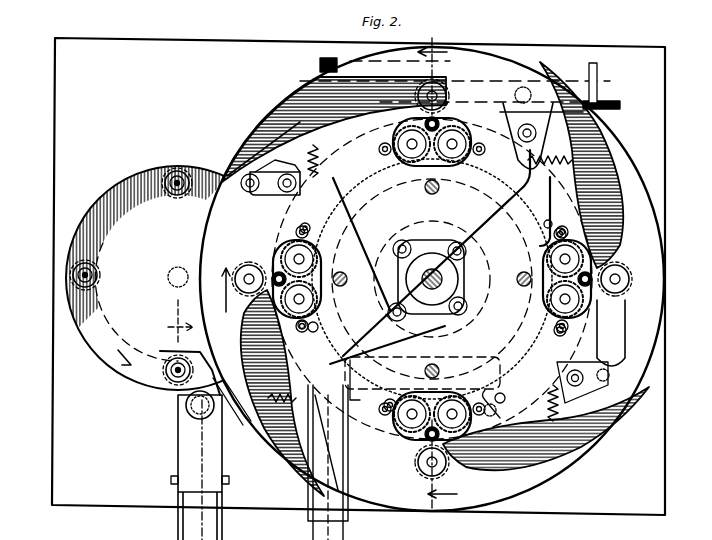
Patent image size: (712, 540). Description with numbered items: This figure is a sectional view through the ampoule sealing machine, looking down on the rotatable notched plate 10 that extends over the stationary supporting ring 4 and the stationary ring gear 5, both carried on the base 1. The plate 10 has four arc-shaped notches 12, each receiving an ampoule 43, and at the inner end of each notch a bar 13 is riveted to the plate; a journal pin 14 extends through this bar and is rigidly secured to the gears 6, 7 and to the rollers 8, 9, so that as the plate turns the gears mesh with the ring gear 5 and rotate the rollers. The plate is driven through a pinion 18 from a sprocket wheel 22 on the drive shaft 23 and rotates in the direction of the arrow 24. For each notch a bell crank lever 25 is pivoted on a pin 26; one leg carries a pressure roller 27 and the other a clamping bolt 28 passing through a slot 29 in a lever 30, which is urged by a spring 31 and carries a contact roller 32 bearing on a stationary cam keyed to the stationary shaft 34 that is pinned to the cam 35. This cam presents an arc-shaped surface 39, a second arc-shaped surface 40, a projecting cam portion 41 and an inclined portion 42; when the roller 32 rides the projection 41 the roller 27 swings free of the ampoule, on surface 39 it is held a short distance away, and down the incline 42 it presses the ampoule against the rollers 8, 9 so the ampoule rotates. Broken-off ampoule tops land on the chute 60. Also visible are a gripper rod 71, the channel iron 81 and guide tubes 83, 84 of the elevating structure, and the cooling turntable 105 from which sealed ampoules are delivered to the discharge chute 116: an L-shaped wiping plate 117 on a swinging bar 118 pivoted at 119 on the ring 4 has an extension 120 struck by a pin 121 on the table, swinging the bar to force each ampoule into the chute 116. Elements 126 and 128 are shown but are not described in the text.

The base 1 is at (660, 456).
The stationary supporting ring 4 is at (274, 468).
The stationary ring gear 5 is at (530, 240).
The gear 6 is at (280, 250).
The gear 7 is at (310, 296).
The roller 8 is at (550, 310).
The roller 9 is at (441, 279).
The rotatable notched plate 10 is at (652, 264).
The arc-shaped notch 12 is at (372, 90).
The bar 13 is at (307, 223).
The journal pin 14 is at (378, 290).
The pinion 18 is at (408, 345).
The sprocket wheel 22 is at (620, 106).
The drive shaft 23 is at (598, 76).
The arrow 24 is at (219, 290).
The bell crank lever 25 is at (517, 104).
The pin 26 is at (228, 172).
The pressure roller 27 is at (442, 88).
The clamping bolt 28 is at (270, 183).
The slot 29 is at (277, 161).
The lever 30 is at (442, 269).
The spring 31 is at (562, 406).
The contact roller 32 is at (394, 248).
The stationary shaft 34 is at (478, 276).
The cam 35 is at (406, 262).
The arc-shaped surface 39 is at (406, 273).
The second arc-shaped surface 40 is at (463, 300).
The projecting cam portion 41 is at (406, 284).
The inclined portion 42 is at (457, 242).
The ampoule 43 is at (178, 172).
The chute 60 is at (316, 470).
The gripper rod 71 is at (432, 279).
The channel iron 81 is at (474, 347).
The guide tube 83 is at (503, 396).
The guide tube 84 is at (384, 398).
The cooling turntable 105 is at (110, 360).
The ampoule discharge chute 116 is at (186, 412).
The L-shaped wiping plate 117 is at (172, 326).
The swinging bar 118 is at (233, 412).
The pivot 119 is at (314, 355).
The extension 120 is at (324, 343).
The pin 121 is at (507, 405).
The roller 126 is at (166, 370).
The disc 128 is at (170, 175).